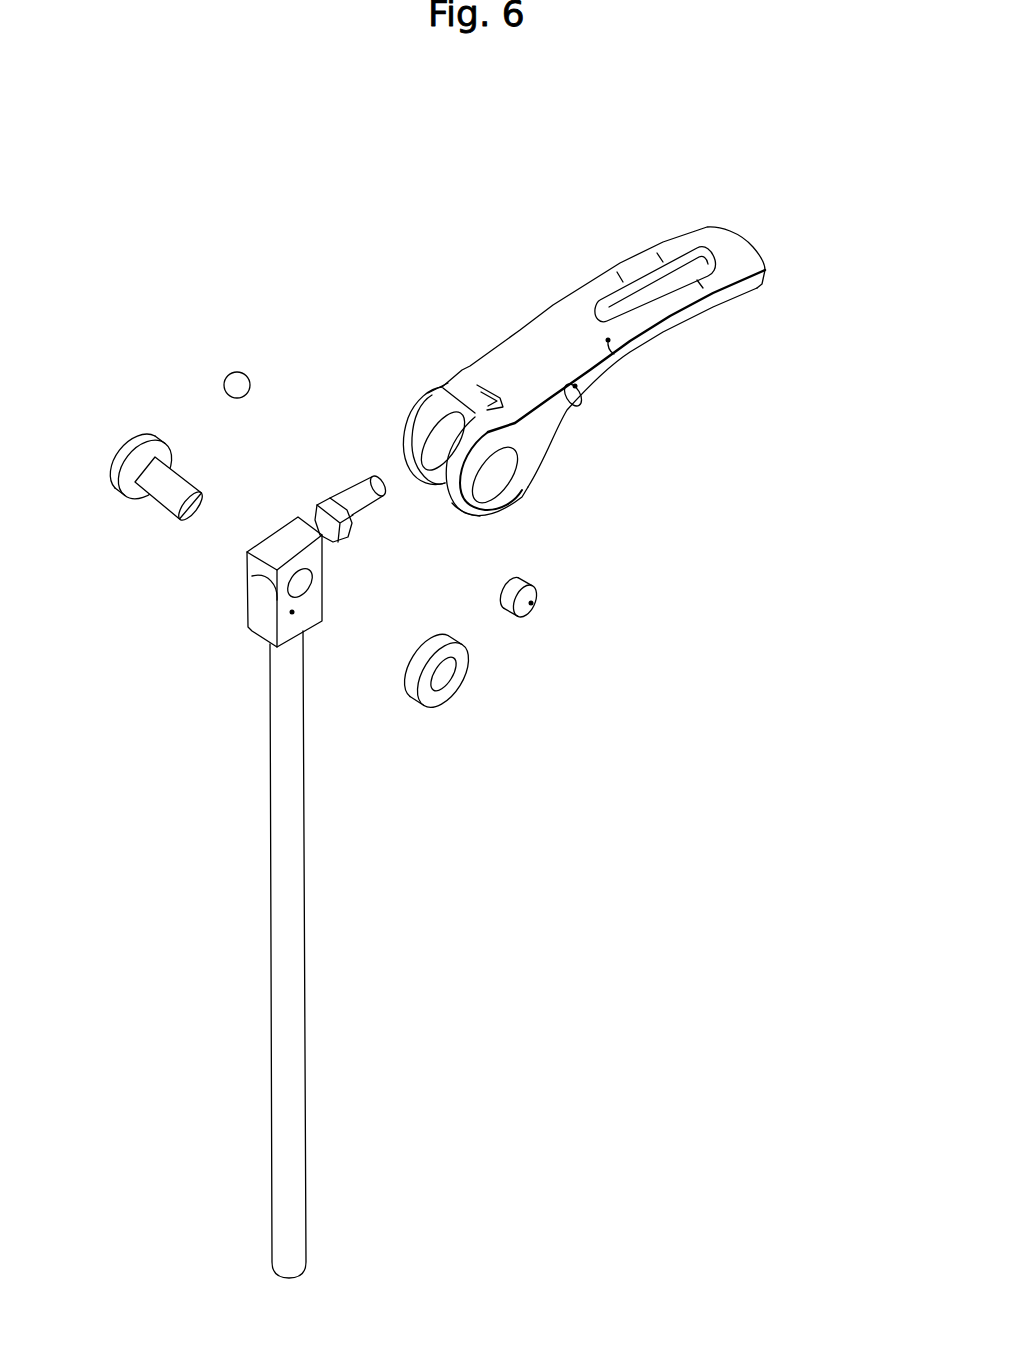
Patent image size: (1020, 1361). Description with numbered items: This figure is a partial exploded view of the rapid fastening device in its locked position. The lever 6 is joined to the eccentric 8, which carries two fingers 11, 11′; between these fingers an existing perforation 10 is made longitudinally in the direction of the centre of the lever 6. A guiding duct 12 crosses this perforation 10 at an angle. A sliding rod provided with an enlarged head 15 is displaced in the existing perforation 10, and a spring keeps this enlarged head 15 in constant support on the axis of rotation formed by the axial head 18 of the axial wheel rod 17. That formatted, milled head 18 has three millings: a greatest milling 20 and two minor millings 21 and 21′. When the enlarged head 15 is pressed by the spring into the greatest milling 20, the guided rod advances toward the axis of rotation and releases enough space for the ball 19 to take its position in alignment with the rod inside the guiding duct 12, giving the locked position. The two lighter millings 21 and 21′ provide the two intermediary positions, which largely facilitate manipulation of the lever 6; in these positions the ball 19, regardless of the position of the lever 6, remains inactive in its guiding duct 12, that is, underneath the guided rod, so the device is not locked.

The lever 6 is at (608, 340).
The eccentric 8 is at (505, 500).
The existing perforation 10 is at (487, 393).
The fingers of the eccentric 11 is at (420, 417).
The fingers of the eccentric 11′ is at (465, 513).
The guiding duct 12 is at (575, 386).
The enlarged head 15 is at (322, 519).
The axial wheel rod 17 is at (290, 1168).
The axial head of the wheel axis rod 18 is at (292, 612).
The ball 19 is at (243, 385).
The greatest milling 20 is at (253, 572).
The minor milling 21 is at (285, 537).
The minor milling 21′ is at (322, 555).